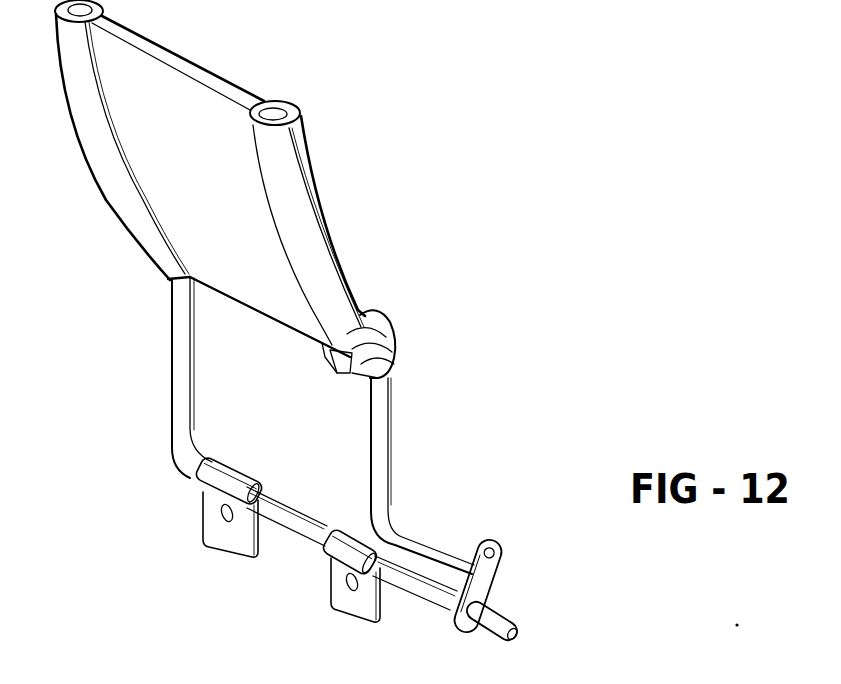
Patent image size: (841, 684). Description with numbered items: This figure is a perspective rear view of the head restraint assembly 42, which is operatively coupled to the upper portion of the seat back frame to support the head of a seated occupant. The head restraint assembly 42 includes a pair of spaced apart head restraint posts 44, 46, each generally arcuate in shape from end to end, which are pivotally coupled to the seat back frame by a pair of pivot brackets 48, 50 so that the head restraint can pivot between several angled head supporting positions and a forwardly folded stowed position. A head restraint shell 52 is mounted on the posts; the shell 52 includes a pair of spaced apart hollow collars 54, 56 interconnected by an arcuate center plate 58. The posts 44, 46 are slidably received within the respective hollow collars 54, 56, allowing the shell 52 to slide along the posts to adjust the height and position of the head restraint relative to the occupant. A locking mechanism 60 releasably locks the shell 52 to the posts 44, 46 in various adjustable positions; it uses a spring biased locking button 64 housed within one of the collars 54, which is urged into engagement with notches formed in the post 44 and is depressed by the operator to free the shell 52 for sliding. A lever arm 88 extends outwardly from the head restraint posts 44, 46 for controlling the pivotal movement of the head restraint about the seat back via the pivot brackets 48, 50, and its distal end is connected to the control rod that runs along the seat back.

The head restraint assembly 42 is at (328, 204).
The head restraint post 44 is at (386, 456).
The head restraint post 46 is at (195, 370).
The pivot bracket 48 is at (340, 602).
The pivot bracket 50 is at (205, 516).
The head restraint shell 52 is at (228, 295).
The hollow collar 54 is at (335, 283).
The hollow collar 56 is at (87, 146).
The arcuate center plate 58 is at (199, 70).
The locking mechanism 60 is at (392, 336).
The locking button 64 is at (332, 374).
The lever arm 88 is at (507, 587).